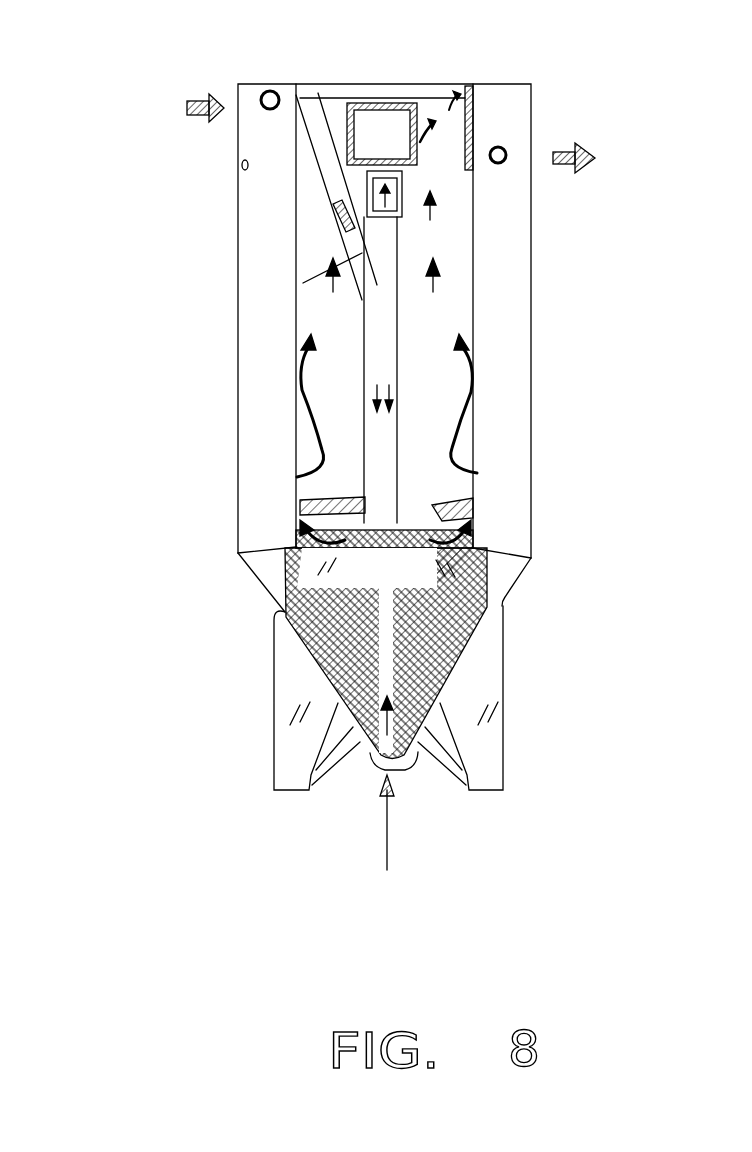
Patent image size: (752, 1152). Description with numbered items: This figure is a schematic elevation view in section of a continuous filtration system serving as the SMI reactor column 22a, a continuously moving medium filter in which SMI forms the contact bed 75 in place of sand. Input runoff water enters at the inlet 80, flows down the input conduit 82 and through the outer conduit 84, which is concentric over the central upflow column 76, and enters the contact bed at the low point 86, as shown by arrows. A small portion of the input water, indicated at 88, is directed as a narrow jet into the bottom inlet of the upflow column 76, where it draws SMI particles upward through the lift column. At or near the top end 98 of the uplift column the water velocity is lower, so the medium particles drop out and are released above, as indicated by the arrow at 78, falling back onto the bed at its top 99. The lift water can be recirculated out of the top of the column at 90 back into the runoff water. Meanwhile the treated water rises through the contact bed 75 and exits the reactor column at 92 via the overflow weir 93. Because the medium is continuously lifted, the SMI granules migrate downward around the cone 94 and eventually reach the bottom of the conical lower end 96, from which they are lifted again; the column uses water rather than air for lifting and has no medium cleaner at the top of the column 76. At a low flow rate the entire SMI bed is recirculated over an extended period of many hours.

The SMI reactor column 22a is at (237, 420).
The SMI contact bed 75 is at (427, 427).
The central upflow column 76 is at (315, 640).
The release of medium above column 78 is at (418, 165).
The input water inlet 80 is at (185, 117).
The input conduit 82 is at (335, 210).
The outer conduit 84 is at (383, 347).
The low point of contact bed 86 is at (400, 497).
The lifting column water inlet 88 is at (385, 818).
The recirculation outlet at column top 90 is at (472, 50).
The reactor column exit 92 is at (560, 170).
The overflow weir 93 is at (473, 97).
The cone 94 is at (433, 580).
The conical lower end 96 is at (478, 655).
The top end of uplift column 98 is at (343, 103).
The top of contact bed 99 is at (410, 278).